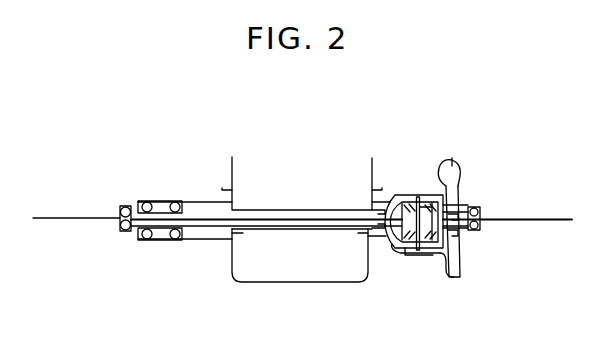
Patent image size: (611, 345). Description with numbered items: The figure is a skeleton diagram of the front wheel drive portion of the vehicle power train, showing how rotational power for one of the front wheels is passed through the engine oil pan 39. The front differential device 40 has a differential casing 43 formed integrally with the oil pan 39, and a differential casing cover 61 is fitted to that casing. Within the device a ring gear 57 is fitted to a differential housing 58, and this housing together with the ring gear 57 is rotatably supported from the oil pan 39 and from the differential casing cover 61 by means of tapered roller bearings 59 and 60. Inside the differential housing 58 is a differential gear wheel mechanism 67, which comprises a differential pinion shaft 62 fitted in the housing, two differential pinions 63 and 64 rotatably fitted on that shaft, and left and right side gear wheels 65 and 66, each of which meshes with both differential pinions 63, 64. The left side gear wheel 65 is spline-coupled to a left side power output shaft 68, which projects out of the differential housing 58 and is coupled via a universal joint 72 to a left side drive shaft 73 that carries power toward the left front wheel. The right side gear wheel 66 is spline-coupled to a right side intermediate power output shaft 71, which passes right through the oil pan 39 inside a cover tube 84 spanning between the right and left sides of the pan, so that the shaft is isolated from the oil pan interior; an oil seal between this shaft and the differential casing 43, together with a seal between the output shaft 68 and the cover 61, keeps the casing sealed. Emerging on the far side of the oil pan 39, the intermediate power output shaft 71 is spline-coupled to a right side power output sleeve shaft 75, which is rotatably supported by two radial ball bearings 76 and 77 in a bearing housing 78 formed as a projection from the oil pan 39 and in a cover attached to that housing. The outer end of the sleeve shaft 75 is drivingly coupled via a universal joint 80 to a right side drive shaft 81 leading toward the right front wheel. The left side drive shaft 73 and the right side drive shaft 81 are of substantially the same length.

The oil pan 39 is at (278, 282).
The front differential device 40 is at (437, 158).
The differential casing 43 is at (418, 190).
The ring gear 57 is at (458, 167).
The differential housing 58 is at (410, 250).
The tapered roller bearing 59 is at (380, 200).
The tapered roller bearing 60 is at (460, 233).
The differential casing cover 61 is at (462, 185).
The differential pinion shaft 62 is at (462, 273).
The differential pinion 63 is at (428, 192).
The differential pinion 64 is at (413, 253).
The left side gear wheel 65 is at (498, 178).
The right side gear wheel 66 is at (410, 190).
The differential gear wheel mechanism 67 is at (422, 257).
The left side power output shaft 68 is at (465, 203).
The right side intermediate power output shaft 71 is at (308, 219).
The universal joint 72 is at (480, 212).
The left side drive shaft 73 is at (537, 219).
The right side power output sleeve shaft 75 is at (155, 206).
The radial ball bearing 76 is at (174, 205).
The radial ball bearing 77 is at (145, 240).
The bearing housing 78 is at (190, 240).
The universal joint 80 is at (122, 228).
The right side drive shaft 81 is at (80, 217).
The cover tube 84 is at (270, 210).